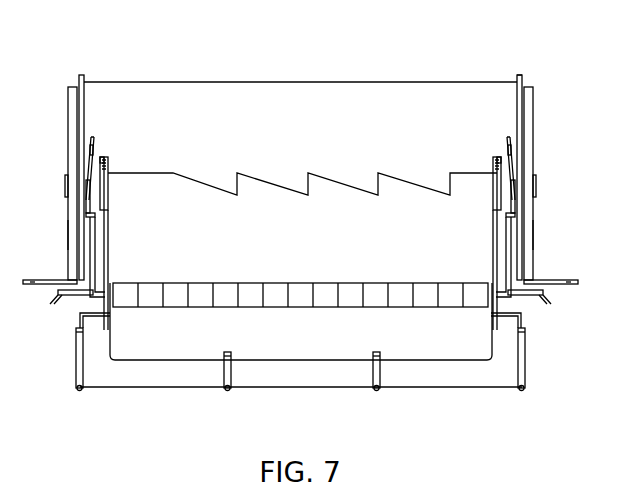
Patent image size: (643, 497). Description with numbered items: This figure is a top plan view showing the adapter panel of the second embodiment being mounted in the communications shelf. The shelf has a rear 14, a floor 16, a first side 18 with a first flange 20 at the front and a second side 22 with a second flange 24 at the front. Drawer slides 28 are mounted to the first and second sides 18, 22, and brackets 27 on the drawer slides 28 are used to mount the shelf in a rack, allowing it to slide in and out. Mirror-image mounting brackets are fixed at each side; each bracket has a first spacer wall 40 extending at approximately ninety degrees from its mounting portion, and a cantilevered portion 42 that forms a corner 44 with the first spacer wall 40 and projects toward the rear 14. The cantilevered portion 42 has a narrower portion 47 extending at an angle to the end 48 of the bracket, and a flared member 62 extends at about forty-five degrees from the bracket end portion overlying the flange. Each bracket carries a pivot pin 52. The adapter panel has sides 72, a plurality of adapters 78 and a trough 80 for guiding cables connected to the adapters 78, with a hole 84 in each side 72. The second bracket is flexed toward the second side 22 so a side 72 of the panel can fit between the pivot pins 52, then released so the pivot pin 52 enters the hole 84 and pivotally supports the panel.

The rear 14 is at (250, 82).
The floor 16 is at (318, 121).
The first side 18 is at (522, 77).
The first flange 20 is at (578, 284).
The second side 22 is at (79, 80).
The second flange 24 is at (60, 290).
The brackets 27 is at (68, 235).
The drawer slides 28 is at (68, 125).
The first spacer wall 40 is at (95, 228).
The cantilevered portion 42 is at (87, 197).
The corner 44 is at (95, 215).
The narrower portion 47 is at (93, 137).
The end 48 is at (94, 148).
The pivot pins 52 is at (102, 158).
The flared member 62 is at (52, 305).
The sides 72 is at (108, 250).
The adapters 78 is at (300, 298).
The trough 80 is at (300, 388).
The hole 84 is at (108, 168).